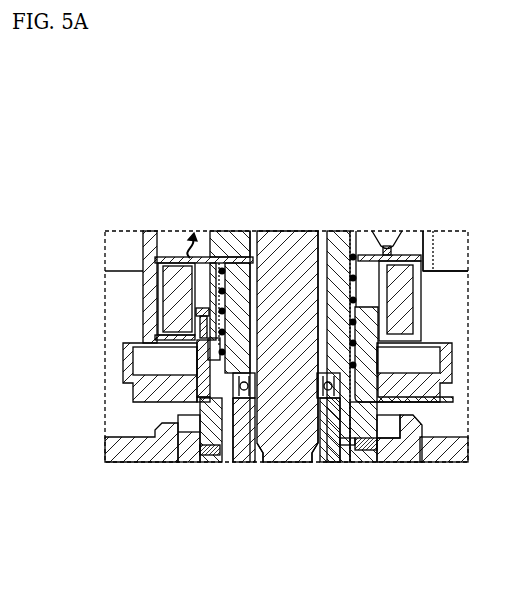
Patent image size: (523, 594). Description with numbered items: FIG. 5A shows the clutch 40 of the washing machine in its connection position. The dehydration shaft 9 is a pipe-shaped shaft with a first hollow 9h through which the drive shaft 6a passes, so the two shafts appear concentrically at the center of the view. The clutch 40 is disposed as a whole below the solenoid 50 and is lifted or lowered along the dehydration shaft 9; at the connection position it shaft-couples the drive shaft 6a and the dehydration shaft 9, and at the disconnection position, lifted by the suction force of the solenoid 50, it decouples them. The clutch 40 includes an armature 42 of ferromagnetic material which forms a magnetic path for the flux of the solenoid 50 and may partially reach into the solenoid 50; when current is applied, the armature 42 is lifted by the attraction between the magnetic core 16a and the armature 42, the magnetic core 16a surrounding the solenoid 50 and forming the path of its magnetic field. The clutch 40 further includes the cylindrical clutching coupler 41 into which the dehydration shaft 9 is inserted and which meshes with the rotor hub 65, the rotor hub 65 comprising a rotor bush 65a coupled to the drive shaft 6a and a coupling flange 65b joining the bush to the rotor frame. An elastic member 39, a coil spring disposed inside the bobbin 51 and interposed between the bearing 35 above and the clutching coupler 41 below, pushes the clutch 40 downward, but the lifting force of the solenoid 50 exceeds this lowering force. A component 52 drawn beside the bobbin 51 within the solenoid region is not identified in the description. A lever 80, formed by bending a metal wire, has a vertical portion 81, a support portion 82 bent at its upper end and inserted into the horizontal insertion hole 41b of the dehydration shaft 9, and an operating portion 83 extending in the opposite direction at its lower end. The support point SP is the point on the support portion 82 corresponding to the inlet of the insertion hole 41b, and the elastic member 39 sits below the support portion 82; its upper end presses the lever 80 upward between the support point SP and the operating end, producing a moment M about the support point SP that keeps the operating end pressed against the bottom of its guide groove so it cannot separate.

The dehydration shaft 9 is at (224, 388).
The first hollow 9h is at (321, 235).
The drive shaft 6a is at (287, 440).
The magnetic core 16a is at (446, 255).
The bearing 35 is at (162, 257).
The elastic member 39 is at (352, 238).
The clutch 40 is at (117, 366).
The clutching coupler 41 is at (200, 354).
The insertion hole 41b is at (222, 308).
The armature 42 is at (458, 363).
The solenoid 50 is at (347, 146).
The bobbin 51 is at (374, 258).
The inner member 52 is at (403, 262).
The rotor hub 65 is at (387, 547).
The rotor bush 65a is at (334, 438).
The coupling flange 65b is at (408, 438).
The lever 80 is at (262, 85).
The vertical portion 81 is at (203, 257).
The support portion 82 is at (237, 257).
The operating portion 83 is at (181, 257).
The support point SP is at (215, 257).
The moment M is at (189, 239).